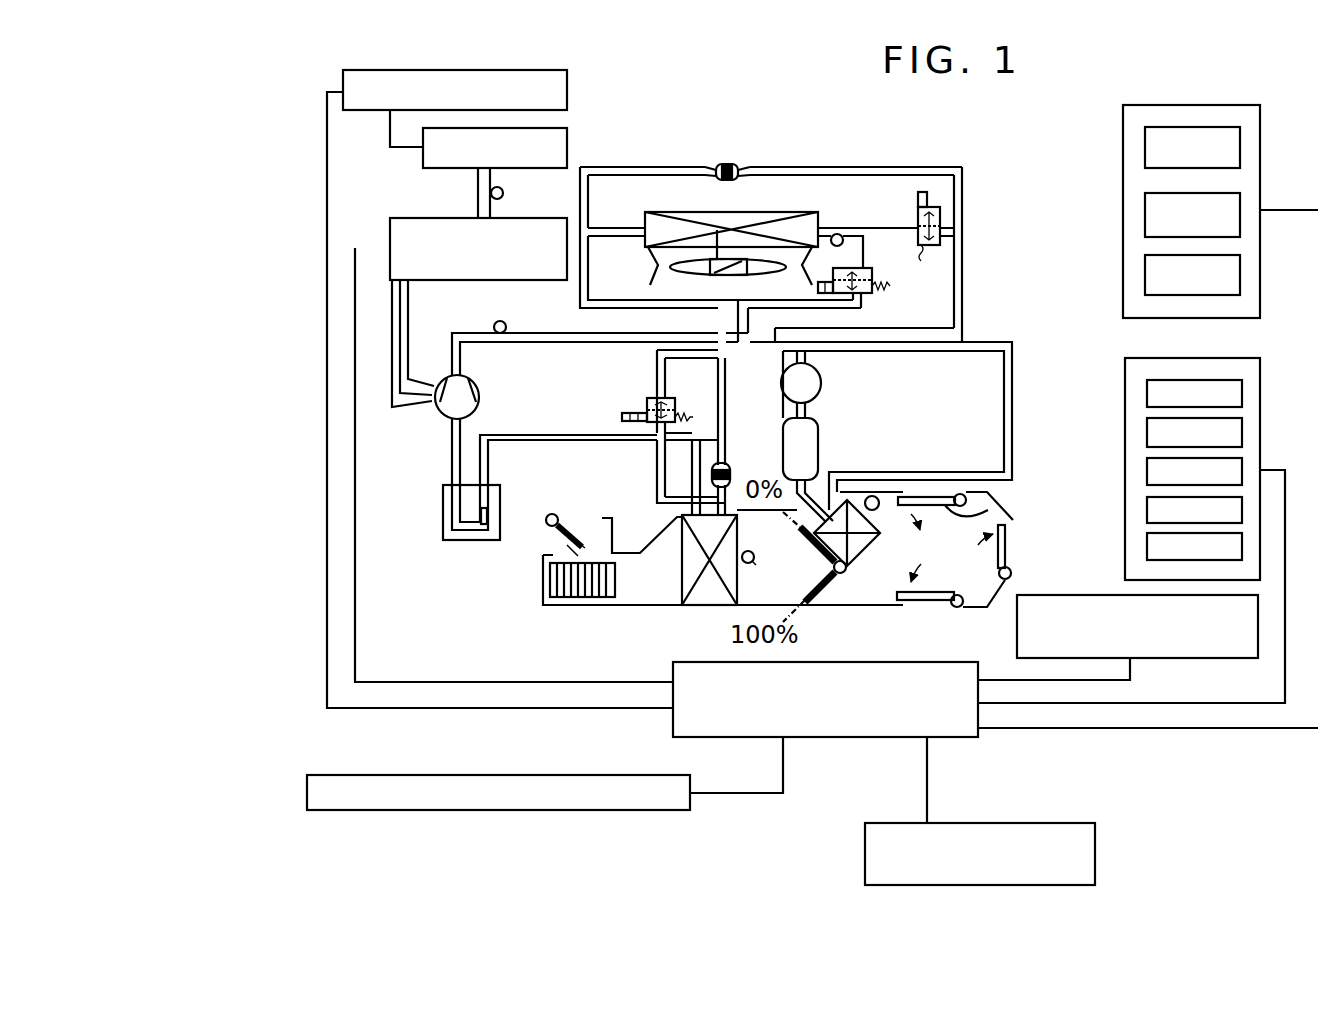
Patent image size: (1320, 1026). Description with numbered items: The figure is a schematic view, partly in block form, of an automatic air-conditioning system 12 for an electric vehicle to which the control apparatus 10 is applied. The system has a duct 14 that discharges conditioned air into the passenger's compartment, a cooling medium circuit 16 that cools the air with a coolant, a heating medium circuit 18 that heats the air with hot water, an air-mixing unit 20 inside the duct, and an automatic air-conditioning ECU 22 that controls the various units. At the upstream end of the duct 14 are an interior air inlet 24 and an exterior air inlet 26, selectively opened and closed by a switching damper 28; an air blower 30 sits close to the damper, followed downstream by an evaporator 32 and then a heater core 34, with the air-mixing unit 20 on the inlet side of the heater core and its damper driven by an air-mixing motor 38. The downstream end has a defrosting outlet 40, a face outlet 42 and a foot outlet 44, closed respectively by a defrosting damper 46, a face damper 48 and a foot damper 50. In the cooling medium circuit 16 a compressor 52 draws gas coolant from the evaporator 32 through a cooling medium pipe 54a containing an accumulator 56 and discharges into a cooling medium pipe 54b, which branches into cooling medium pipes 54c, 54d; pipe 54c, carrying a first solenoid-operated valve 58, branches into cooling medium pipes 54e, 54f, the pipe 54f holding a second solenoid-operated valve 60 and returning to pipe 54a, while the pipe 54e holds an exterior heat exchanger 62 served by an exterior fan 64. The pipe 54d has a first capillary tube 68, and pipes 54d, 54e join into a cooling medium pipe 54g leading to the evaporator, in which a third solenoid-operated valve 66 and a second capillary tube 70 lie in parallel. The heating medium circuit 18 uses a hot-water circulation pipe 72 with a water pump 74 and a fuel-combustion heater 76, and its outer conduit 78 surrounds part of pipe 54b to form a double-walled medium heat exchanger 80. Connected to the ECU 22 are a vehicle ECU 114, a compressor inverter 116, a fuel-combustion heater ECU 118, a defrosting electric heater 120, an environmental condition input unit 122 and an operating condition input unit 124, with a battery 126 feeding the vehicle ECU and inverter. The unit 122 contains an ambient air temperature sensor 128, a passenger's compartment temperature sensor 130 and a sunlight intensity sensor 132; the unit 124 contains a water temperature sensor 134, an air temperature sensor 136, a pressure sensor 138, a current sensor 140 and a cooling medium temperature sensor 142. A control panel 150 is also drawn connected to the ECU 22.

The control apparatus 10 is at (215, 755).
The automatic air-conditioning system 12 is at (1062, 93).
The duct 14 is at (668, 606).
The cooling medium circuit 16 is at (438, 428).
The heating medium circuit 18 is at (1060, 404).
The air-mixing unit 20 is at (836, 588).
The automatic air-conditioning ECU 22 is at (860, 737).
The interior air inlet 24 is at (588, 518).
The exterior air inlet 26 is at (546, 542).
The switching damper 28 is at (565, 514).
The air blower 30 is at (577, 592).
The evaporator 32 is at (704, 594).
The heater core 34 is at (866, 543).
The air-mixing motor 38 is at (847, 570).
The defrosting outlet 40 is at (929, 492).
The face outlet 42 is at (1060, 582).
The foot outlet 44 is at (929, 607).
The defrosting damper 46 is at (965, 494).
The face damper 48 is at (1005, 548).
The foot damper 50 is at (945, 592).
The compressor 52 is at (477, 394).
The cooling medium pipe 54a is at (553, 412).
The cooling medium pipe 54b is at (600, 343).
The cooling medium pipe 54c is at (868, 228).
The cooling medium pipe 54d is at (833, 167).
The cooling medium pipe 54e is at (618, 227).
The cooling medium pipe 54f is at (845, 309).
The cooling medium pipe 54g is at (618, 297).
The accumulator 56 is at (443, 517).
The first solenoid-operated valve 58 is at (940, 202).
The second solenoid-operated valve 60 is at (890, 286).
The exterior heat exchanger 62 is at (748, 212).
The exterior fan 64 is at (717, 228).
The third solenoid-operated valve 66 is at (684, 395).
The first capillary tube 68 is at (733, 163).
The second capillary tube 70 is at (742, 468).
The hot-water circulation pipe 72 is at (1012, 442).
The water pump 74 is at (822, 386).
The fuel-combustion heater 76 is at (822, 440).
The outer conduit 78 is at (903, 352).
The medium heat exchanger 80 is at (968, 332).
The vehicle ECU 114 is at (567, 90).
The compressor inverter 116 is at (414, 218).
The fuel-combustion heater ECU 118 is at (304, 781).
The defrosting electric heater 120 is at (1183, 658).
The environmental condition input unit 122 is at (1218, 104).
The operating condition input unit 124 is at (1225, 357).
The battery 126 is at (567, 148).
The ambient air temperature sensor 128 is at (1240, 133).
The passenger's compartment temperature sensor 130 is at (1240, 197).
The sunlight intensity sensor 132 is at (1240, 262).
The water temperature sensor 134 is at (1242, 393).
The air temperature sensor 136 is at (1266, 432).
The pressure sensor 138 is at (506, 325).
The current sensor 140 is at (503, 195).
The cooling medium temperature sensor 142 is at (837, 234).
The control panel 150 is at (1040, 821).